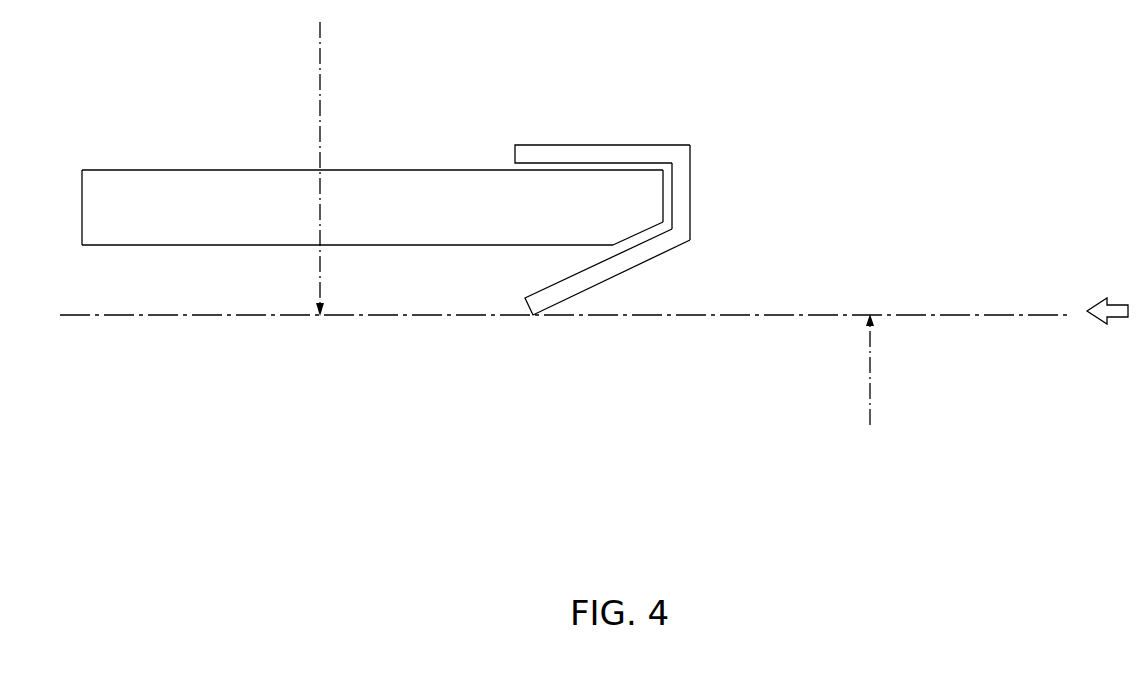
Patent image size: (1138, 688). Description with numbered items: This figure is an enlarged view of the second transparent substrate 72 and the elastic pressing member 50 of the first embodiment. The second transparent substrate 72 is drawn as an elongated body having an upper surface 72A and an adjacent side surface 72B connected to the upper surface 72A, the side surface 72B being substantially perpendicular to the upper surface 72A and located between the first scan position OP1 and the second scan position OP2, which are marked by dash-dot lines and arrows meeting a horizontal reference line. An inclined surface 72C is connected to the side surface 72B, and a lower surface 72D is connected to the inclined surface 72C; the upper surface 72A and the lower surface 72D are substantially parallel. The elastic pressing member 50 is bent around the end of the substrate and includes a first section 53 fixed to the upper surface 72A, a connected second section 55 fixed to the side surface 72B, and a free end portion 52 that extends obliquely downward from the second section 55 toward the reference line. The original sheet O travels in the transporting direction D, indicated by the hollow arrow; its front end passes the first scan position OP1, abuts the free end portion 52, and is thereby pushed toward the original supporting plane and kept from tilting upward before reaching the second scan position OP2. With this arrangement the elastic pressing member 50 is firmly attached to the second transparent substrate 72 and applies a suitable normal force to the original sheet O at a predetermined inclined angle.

The elastic pressing member 50 is at (649, 217).
The free end portion 52 is at (540, 301).
The first section 53 is at (585, 150).
The second section 55 is at (683, 197).
The second transparent substrate 72 is at (447, 223).
The upper surface 72A is at (415, 170).
The side surface 72B is at (665, 185).
The inclined surface 72C is at (655, 229).
The lower surface 72D is at (176, 247).
The original sheet O is at (460, 316).
The first scan position OP1 is at (868, 387).
The second scan position OP2 is at (320, 62).
The transporting direction D is at (1112, 322).